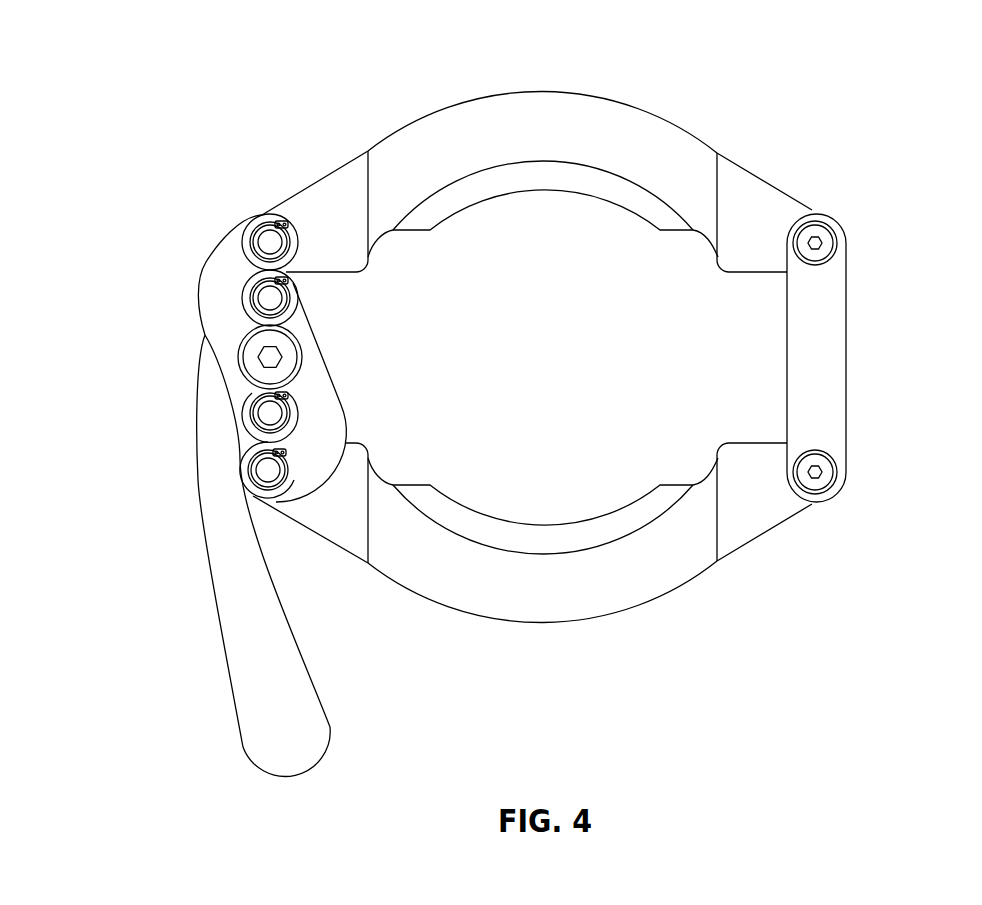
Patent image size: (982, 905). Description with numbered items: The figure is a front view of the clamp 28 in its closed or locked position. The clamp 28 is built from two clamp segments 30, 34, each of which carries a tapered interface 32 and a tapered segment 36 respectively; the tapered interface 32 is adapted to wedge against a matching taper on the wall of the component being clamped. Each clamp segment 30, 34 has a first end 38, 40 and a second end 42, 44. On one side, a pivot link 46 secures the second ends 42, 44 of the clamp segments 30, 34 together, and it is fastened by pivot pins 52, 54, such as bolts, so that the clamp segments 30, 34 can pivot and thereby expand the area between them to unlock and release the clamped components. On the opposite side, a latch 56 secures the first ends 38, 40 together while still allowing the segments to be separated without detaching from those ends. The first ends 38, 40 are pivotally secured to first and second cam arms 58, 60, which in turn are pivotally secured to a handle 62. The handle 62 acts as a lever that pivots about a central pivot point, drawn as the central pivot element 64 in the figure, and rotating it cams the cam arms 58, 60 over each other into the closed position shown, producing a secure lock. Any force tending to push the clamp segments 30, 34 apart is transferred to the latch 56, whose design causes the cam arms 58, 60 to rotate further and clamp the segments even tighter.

The clamp 28 is at (168, 157).
The clamp segment 30 is at (592, 112).
The tapered interface 32 is at (542, 177).
The clamp segment 34 is at (545, 625).
The tapered segment 36 is at (511, 536).
The first end 38 is at (323, 173).
The first end 40 is at (400, 590).
The second end 42 is at (763, 177).
The second end 44 is at (765, 538).
The pivot link 46 is at (846, 350).
The pivot pin 52 is at (817, 243).
The pivot pin 54 is at (817, 473).
The latch 56 is at (134, 322).
The first cam arm 58 is at (202, 267).
The second cam arm 60 is at (345, 415).
The handle 62 is at (218, 618).
The pivot bolt 64 is at (282, 357).